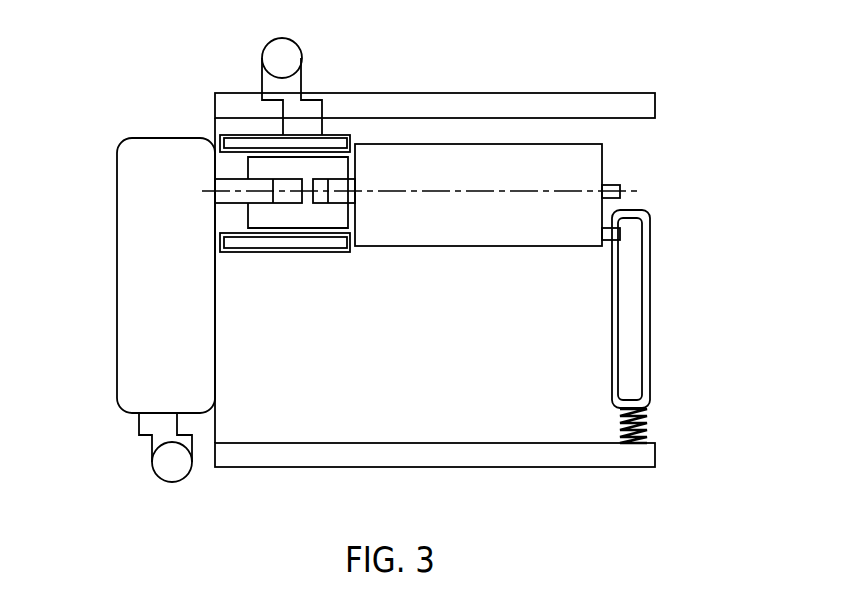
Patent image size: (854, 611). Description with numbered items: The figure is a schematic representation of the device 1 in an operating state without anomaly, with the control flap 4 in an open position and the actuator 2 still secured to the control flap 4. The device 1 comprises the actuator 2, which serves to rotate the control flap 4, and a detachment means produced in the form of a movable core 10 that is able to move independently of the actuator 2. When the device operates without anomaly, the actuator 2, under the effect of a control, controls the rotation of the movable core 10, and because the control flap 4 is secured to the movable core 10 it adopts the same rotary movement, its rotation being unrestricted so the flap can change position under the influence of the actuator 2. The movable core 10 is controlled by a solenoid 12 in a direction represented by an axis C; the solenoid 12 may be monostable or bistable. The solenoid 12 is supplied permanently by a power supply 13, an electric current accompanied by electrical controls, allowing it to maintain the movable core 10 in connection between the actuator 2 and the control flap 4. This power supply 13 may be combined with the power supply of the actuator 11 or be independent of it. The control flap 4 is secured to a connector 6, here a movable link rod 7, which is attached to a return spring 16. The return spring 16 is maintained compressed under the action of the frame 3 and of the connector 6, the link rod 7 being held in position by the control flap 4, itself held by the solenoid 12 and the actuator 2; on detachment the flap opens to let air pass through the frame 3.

The device 1 is at (718, 147).
The actuator 2 is at (117, 342).
The frame 3 is at (372, 442).
The control flap 4 is at (509, 170).
The connector 6 is at (578, 309).
The movable link rod 7 is at (610, 327).
The movable core 10 is at (268, 160).
The power supply of the actuator 11 is at (165, 459).
The solenoid 12 is at (260, 247).
The power supply 13 is at (287, 77).
The return spring 16 is at (650, 422).
The axis C is at (424, 180).